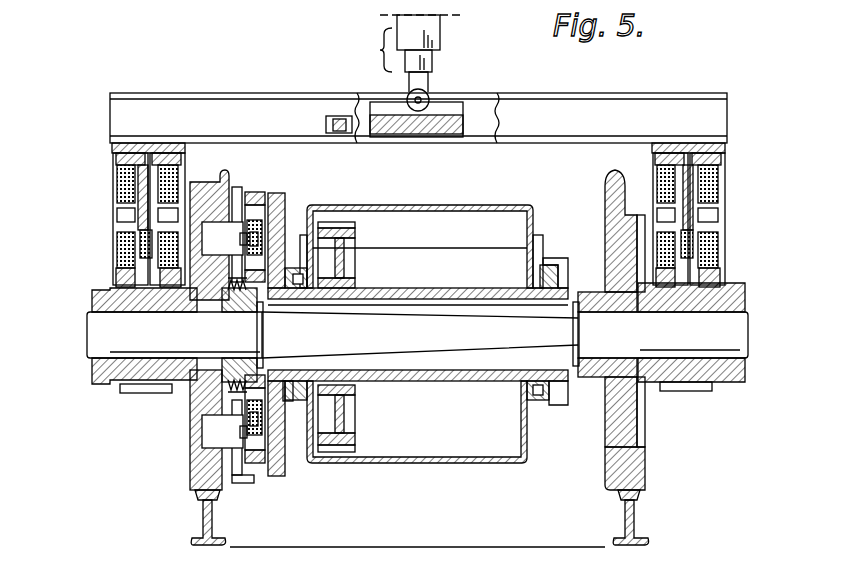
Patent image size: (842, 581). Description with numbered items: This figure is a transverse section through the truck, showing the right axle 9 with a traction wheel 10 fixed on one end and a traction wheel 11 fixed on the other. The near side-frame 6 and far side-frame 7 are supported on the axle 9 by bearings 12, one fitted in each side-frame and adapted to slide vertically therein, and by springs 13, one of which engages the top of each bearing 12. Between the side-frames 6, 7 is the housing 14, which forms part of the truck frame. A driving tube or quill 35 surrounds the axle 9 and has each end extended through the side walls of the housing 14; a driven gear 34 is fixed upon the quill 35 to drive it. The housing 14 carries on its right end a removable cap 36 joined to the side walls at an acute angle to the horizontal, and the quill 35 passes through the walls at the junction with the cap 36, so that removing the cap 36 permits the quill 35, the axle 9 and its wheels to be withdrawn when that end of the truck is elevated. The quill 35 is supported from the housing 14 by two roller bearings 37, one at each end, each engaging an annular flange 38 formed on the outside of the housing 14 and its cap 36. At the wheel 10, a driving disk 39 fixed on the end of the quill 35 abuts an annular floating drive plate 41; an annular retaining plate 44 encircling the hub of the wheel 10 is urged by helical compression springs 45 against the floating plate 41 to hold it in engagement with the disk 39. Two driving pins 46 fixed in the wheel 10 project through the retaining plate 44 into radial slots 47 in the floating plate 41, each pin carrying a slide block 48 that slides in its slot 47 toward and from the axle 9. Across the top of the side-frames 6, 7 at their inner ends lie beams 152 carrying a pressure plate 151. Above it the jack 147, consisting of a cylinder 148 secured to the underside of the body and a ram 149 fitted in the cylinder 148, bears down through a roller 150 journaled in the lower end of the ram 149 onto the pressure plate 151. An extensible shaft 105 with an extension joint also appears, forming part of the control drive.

The near side-frame 6 is at (725, 147).
The far side-frame 7 is at (112, 147).
The axle 9 is at (417, 335).
The traction wheel 10 is at (190, 483).
The traction wheel 11 is at (645, 470).
The bearing 12 is at (92, 370).
The spring 13 is at (117, 244).
The housing 14 is at (512, 207).
The driven gear 34 is at (355, 425).
The driving tube or quill 35 is at (444, 287).
The removable cap 36 is at (458, 245).
The roller bearing 37 is at (298, 289).
The annular flange 38 is at (298, 412).
The driving disk 39 is at (284, 190).
The floating drive plate 41 is at (256, 478).
The retaining plate 44 is at (250, 205).
The helical compression spring 45 is at (232, 378).
The driving pin 46 is at (224, 335).
The radial slot 47 is at (265, 205).
The slide block 48 is at (260, 233).
The extensible shaft 105 is at (326, 122).
The jack 147 is at (367, 50).
The cylinder 148 is at (440, 28).
The ram 149 is at (432, 55).
The roller 150 is at (433, 92).
The pressure plate 151 is at (444, 132).
The beam 152 is at (626, 94).